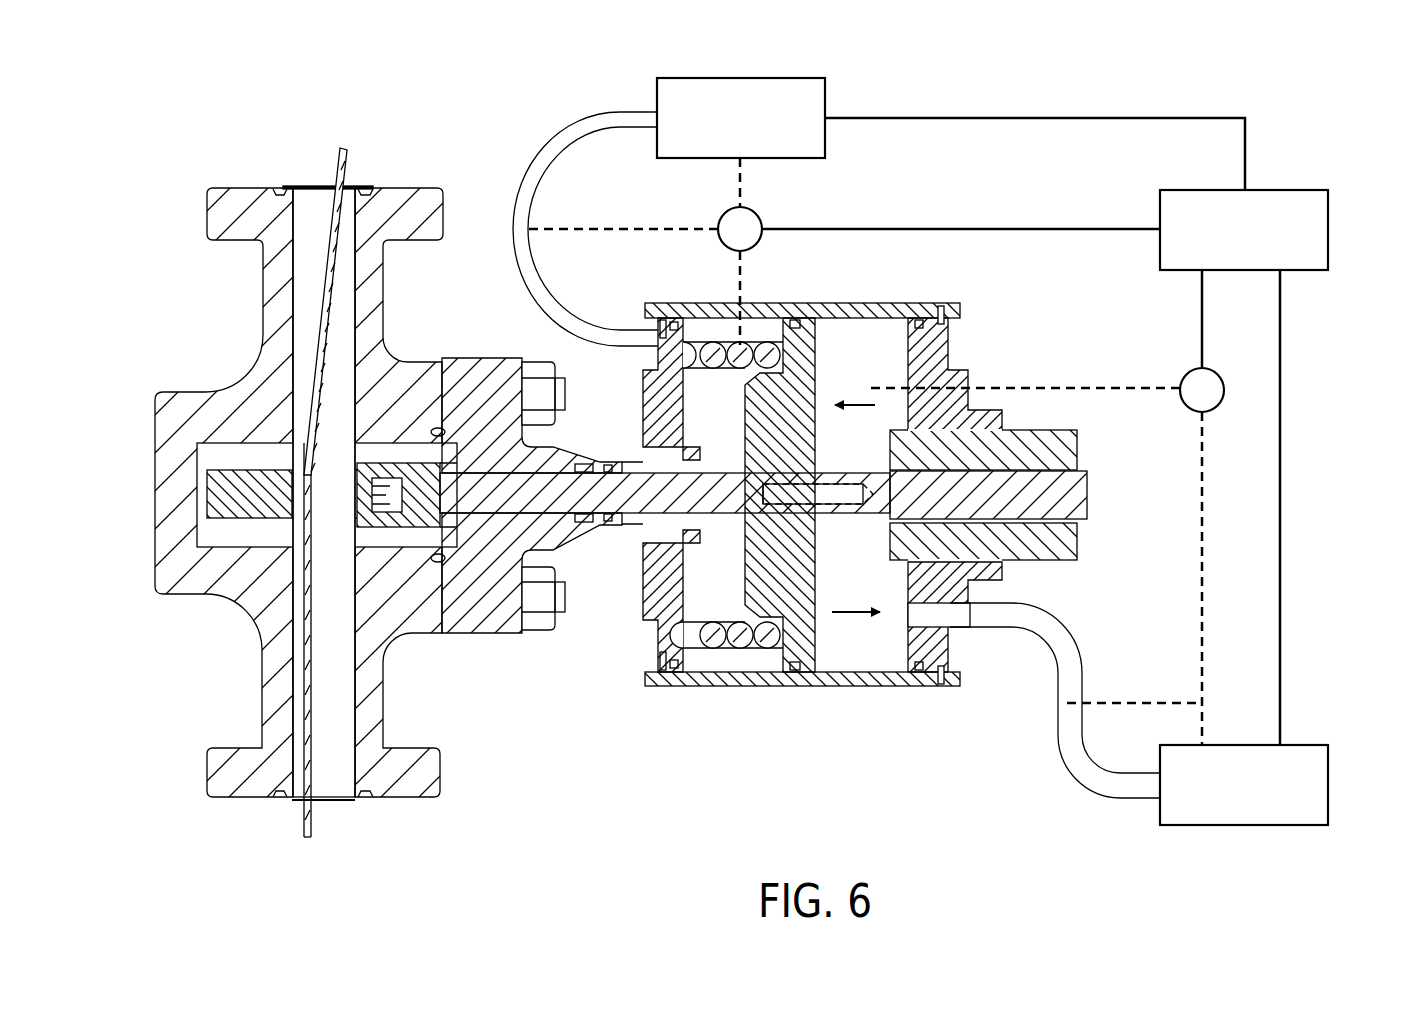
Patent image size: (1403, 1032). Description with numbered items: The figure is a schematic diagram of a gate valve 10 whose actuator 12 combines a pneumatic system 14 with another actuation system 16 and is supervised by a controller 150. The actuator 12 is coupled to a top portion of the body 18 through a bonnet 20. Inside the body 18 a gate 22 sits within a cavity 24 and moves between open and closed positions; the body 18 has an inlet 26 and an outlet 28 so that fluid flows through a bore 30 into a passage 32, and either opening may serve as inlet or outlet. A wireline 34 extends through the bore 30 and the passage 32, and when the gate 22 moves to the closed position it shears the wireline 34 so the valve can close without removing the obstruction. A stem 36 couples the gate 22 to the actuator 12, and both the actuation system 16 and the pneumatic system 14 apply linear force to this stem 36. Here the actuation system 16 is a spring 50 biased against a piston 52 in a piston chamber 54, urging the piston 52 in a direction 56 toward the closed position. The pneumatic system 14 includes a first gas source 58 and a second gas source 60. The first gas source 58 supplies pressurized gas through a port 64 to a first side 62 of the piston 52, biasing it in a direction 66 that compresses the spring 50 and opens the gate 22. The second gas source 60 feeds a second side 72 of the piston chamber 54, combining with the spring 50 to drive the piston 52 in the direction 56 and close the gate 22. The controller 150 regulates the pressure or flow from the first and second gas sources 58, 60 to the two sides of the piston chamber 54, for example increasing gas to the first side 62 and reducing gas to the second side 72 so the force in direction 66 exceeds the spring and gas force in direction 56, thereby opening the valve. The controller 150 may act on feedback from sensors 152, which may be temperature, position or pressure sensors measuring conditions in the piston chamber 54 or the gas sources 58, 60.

The gate valve 10 is at (1052, 68).
The actuator 12 is at (1314, 96).
The pneumatic system 14 is at (848, 66).
The actuation system 16 is at (748, 700).
The body 18 is at (388, 373).
The bonnet 20 is at (495, 375).
The gate 22 is at (220, 480).
The cavity 24 is at (243, 460).
The inlet 26 is at (300, 180).
The outlet 28 is at (332, 803).
The bore 30 is at (322, 175).
The passage 32 is at (345, 293).
The wireline 34 is at (307, 805).
The stem 36 is at (640, 500).
The spring 50 is at (712, 645).
The piston 52 is at (800, 655).
The piston chamber 54 is at (858, 350).
The direction 56 is at (852, 612).
The first gas source 58 is at (1328, 787).
The second gas source 60 is at (738, 78).
The first side 62 is at (852, 648).
The port 64 is at (942, 615).
The direction 66 is at (873, 408).
The second side 72 is at (732, 660).
The controller 150 is at (1328, 232).
The sensors 152 is at (758, 245).